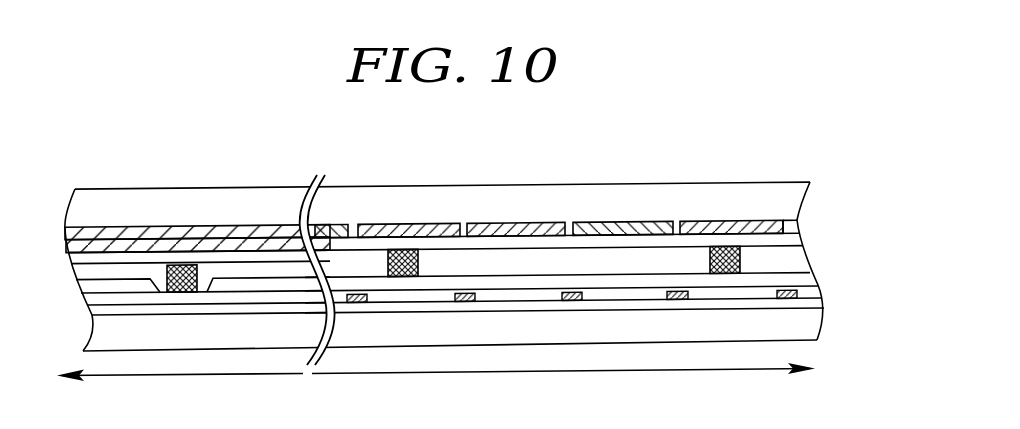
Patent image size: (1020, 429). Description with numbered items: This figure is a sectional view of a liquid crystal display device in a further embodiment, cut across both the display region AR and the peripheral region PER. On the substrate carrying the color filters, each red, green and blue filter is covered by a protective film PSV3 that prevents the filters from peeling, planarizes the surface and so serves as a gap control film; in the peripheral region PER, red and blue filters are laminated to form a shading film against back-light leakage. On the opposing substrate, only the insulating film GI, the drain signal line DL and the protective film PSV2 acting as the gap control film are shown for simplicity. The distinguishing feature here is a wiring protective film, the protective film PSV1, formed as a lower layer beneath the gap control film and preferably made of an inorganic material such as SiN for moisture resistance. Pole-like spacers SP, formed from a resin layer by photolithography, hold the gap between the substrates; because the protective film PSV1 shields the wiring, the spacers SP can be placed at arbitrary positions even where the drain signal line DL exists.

The protective film PSV3 is at (800, 237).
The protective film PSV2 is at (810, 270).
The protective film PSV1 is at (814, 284).
The insulating film GI is at (823, 300).
The pole-like spacer SP is at (187, 292).
The drain signal line DL is at (463, 302).
The peripheral region PER is at (180, 389).
The display region AR is at (563, 383).